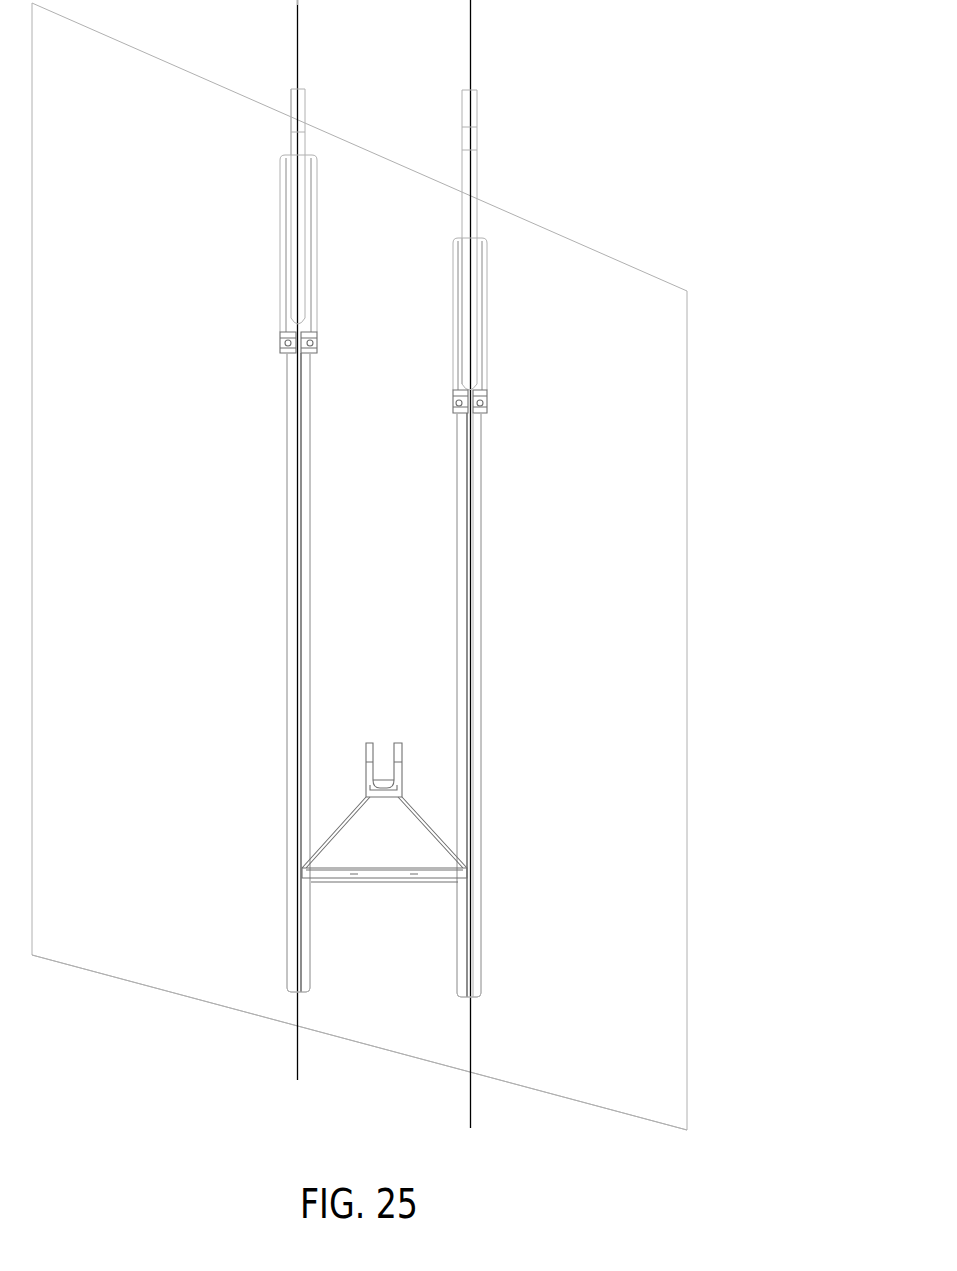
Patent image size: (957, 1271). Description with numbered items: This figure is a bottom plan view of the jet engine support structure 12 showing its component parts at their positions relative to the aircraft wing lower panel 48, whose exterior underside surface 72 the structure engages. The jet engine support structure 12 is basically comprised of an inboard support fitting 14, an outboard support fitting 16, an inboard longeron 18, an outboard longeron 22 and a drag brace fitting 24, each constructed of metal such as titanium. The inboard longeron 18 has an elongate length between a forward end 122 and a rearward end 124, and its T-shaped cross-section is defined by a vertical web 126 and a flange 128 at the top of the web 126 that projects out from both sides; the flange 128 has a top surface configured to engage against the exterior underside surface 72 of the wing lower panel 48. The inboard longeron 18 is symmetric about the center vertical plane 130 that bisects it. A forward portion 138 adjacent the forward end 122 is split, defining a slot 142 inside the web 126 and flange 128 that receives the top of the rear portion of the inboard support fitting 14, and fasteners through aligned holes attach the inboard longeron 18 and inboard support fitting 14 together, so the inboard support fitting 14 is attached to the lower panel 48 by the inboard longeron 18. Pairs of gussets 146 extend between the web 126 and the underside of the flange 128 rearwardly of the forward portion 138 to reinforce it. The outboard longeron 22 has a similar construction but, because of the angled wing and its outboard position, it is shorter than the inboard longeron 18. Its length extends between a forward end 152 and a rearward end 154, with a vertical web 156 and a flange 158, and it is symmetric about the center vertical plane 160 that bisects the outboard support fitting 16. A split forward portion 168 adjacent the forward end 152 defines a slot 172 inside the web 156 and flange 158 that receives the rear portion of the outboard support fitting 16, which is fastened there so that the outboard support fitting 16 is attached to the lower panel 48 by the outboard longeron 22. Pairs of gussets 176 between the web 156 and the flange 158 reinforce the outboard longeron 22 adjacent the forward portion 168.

The jet engine support structure 12 is at (572, 99).
The inboard support fitting 14 is at (307, 104).
The outboard support fitting 16 is at (479, 104).
The inboard longeron 18 is at (285, 457).
The outboard longeron 22 is at (487, 492).
The drag brace fitting 24 is at (434, 824).
The aircraft wing lower panel 48 is at (82, 903).
The exterior underside surface 72 is at (168, 958).
The forward end 122 is at (311, 154).
The rearward end 124 is at (291, 994).
The vertical web 126 is at (299, 793).
The flange 128 is at (287, 706).
The center vertical plane 130 is at (298, 20).
The forward portion 138 is at (322, 240).
The slot 142 is at (289, 148).
The gussets 146 is at (279, 343).
The forward end 152 is at (482, 237).
The rearward end 154 is at (477, 998).
The vertical web 156 is at (481, 680).
The flange 158 is at (457, 594).
The center vertical plane 160 is at (470, 1103).
The forward portion 168 is at (506, 275).
The slot 172 is at (458, 224).
The gussets 176 is at (490, 403).